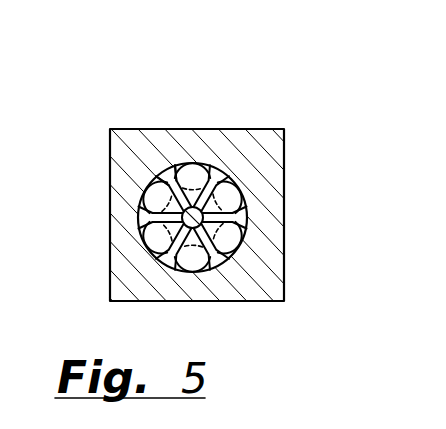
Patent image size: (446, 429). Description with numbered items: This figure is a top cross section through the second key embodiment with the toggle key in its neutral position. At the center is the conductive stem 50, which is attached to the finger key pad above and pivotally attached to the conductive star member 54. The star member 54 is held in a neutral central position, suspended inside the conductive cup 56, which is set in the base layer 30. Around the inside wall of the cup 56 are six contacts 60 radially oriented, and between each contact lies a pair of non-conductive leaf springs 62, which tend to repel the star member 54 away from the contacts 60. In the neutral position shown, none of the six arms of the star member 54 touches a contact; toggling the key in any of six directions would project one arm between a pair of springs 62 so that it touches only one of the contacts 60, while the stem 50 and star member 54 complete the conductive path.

The base layer 30 is at (158, 128).
The conductive cup 56 is at (183, 138).
The conductive stem 50 is at (212, 197).
The contacts 60 is at (213, 195).
The leaf springs 62 is at (215, 235).
The conductive star member 54 is at (168, 175).